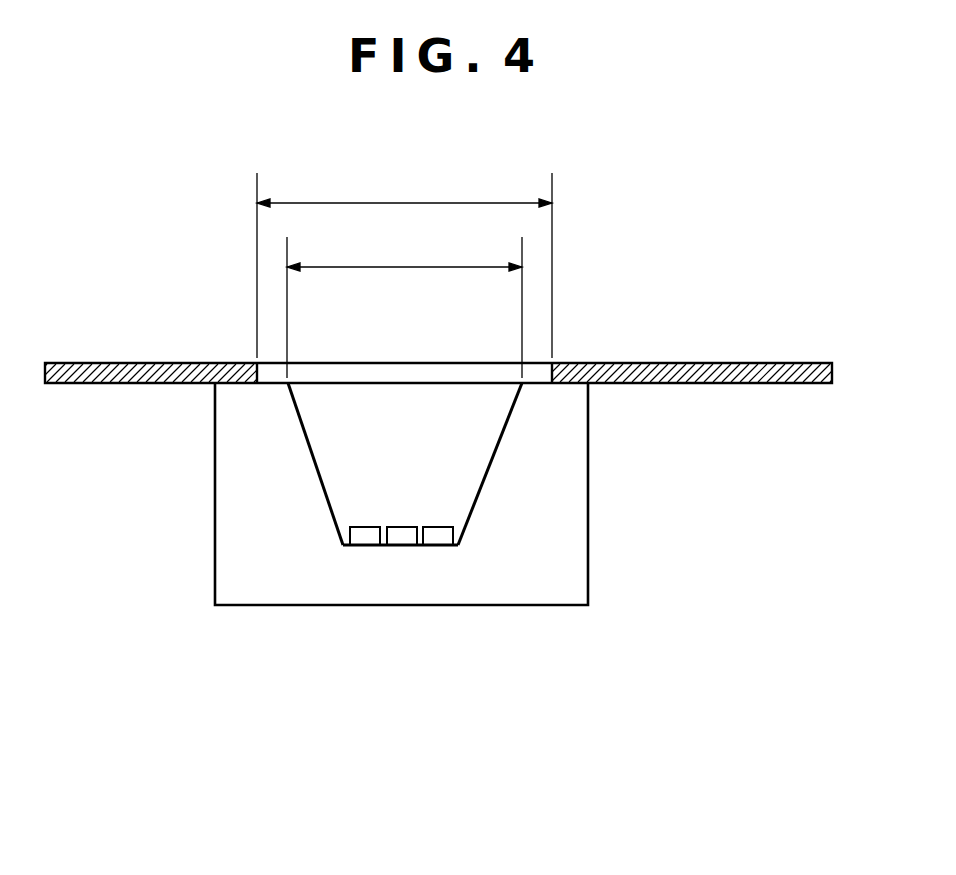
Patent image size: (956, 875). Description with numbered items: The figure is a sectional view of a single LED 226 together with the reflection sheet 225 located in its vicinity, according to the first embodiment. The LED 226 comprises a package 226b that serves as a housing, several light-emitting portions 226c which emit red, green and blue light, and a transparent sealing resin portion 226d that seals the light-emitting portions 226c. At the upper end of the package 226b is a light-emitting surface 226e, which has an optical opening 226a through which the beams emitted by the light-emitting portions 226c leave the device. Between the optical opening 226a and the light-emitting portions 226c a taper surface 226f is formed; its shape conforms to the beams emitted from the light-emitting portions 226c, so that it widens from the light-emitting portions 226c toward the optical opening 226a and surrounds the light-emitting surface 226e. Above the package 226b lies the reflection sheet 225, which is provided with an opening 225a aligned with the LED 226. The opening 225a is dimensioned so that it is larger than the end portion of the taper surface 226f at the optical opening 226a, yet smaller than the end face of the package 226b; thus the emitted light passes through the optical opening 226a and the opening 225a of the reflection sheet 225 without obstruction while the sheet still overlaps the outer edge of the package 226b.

The reflection sheet 225 is at (792, 372).
The opening 225a is at (403, 200).
The LED 226 is at (451, 469).
The optical opening 226a is at (403, 264).
The package 226b is at (576, 442).
The light-emitting portions 226c is at (445, 546).
The transparent sealing resin portion 226d is at (323, 395).
The light-emitting surface 226e is at (479, 383).
The taper surface 226f is at (313, 455).